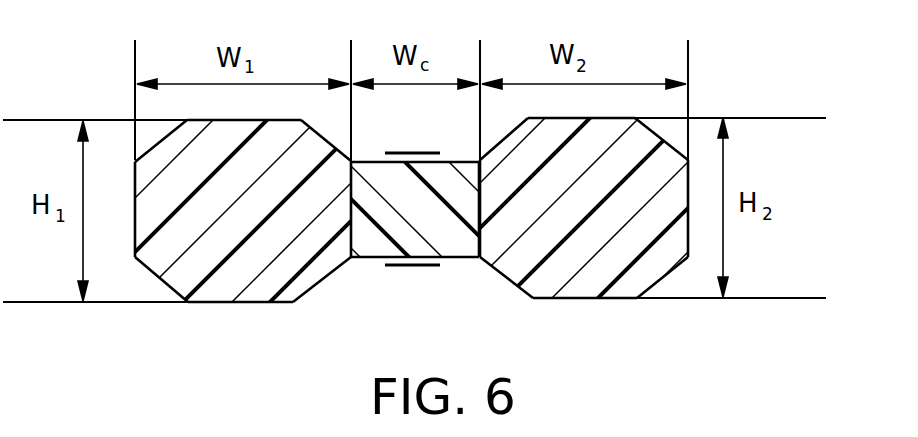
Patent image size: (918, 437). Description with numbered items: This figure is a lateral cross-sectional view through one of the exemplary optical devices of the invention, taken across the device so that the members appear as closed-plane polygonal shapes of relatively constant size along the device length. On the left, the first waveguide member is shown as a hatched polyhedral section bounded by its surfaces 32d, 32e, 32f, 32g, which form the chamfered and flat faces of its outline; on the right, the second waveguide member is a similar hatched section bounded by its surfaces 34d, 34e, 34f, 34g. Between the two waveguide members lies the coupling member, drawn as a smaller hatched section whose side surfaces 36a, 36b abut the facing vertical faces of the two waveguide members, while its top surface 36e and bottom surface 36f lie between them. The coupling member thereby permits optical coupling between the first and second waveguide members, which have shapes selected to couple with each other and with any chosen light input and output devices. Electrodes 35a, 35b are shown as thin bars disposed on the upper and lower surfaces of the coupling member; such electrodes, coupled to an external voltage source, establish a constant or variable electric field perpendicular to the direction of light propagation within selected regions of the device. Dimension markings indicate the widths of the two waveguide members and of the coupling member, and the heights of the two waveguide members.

The lower right chamfered face of first optical fiber 32d is at (348, 208).
The lower left chamfered face of first optical fiber 32e is at (135, 228).
The top face of first optical fiber 32f is at (230, 120).
The bottom face of first optical fiber 32g is at (218, 302).
The lower left chamfered face of second optical fiber 34d is at (481, 187).
The lower right face of second optical fiber 34e is at (688, 223).
The top face of second optical fiber 34f is at (570, 118).
The bottom face of second optical fiber 34g is at (593, 298).
The upper bonding layer 35a is at (392, 153).
The lower bonding layer 35b is at (396, 266).
The left side face of coupling element 36a is at (351, 215).
The right side face of coupling element 36b is at (479, 210).
The top face of coupling element 36e is at (429, 162).
The bottom face of coupling element 36f is at (429, 257).